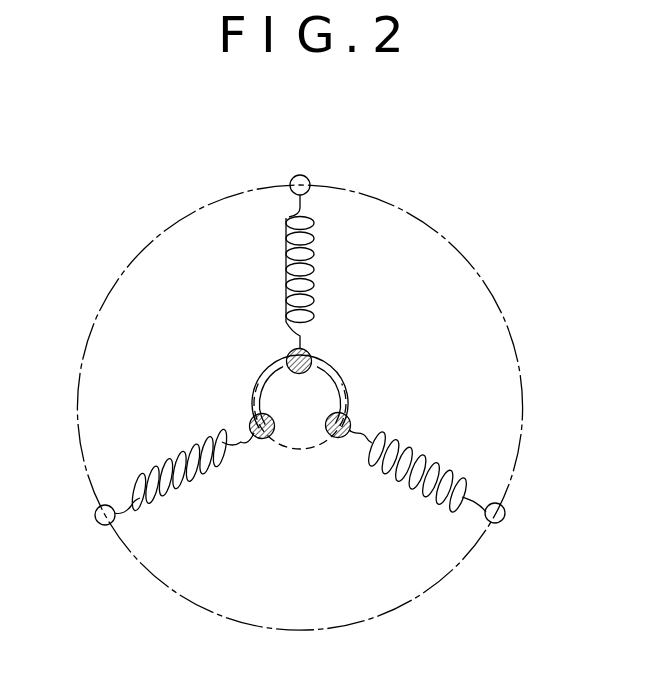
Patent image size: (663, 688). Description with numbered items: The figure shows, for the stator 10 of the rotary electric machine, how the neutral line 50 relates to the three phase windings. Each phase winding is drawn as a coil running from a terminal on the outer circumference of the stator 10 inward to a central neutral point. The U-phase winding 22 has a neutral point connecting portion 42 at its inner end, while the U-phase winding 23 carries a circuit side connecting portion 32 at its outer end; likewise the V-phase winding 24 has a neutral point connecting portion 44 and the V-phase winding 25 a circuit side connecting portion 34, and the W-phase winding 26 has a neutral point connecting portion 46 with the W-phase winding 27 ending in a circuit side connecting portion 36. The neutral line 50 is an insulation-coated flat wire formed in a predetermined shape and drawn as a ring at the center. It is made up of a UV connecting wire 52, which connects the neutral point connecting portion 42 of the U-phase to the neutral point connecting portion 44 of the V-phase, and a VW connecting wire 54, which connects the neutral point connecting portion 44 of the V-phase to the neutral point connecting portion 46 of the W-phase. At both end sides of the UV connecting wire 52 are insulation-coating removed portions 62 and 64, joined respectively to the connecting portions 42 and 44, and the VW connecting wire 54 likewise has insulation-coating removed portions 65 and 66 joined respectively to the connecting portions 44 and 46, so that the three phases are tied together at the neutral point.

The stator 10 is at (123, 266).
The U-phase winding 22 is at (252, 457).
The U-phase winding 23 is at (195, 492).
The V-phase winding 24 is at (322, 272).
The V-phase winding 25 is at (322, 207).
The W-phase winding 26 is at (433, 450).
The W-phase winding 27 is at (490, 483).
The circuit side connecting portion 32 is at (105, 525).
The circuit side connecting portion 34 is at (310, 183).
The circuit side connecting portion 36 is at (497, 523).
The neutral point connecting portion 42 is at (254, 425).
The neutral point connecting portion 44 is at (330, 366).
The neutral point connecting portion 46 is at (344, 440).
The neutral line 50 is at (345, 366).
The UV connecting wire 52 is at (262, 370).
The VW connecting wire 54 is at (348, 392).
The insulation-coating removed portion 62 is at (282, 434).
The insulation-coating removed portion 64 is at (286, 362).
The insulation-coating removed portion 65 is at (320, 352).
The insulation-coating removed portion 66 is at (328, 435).